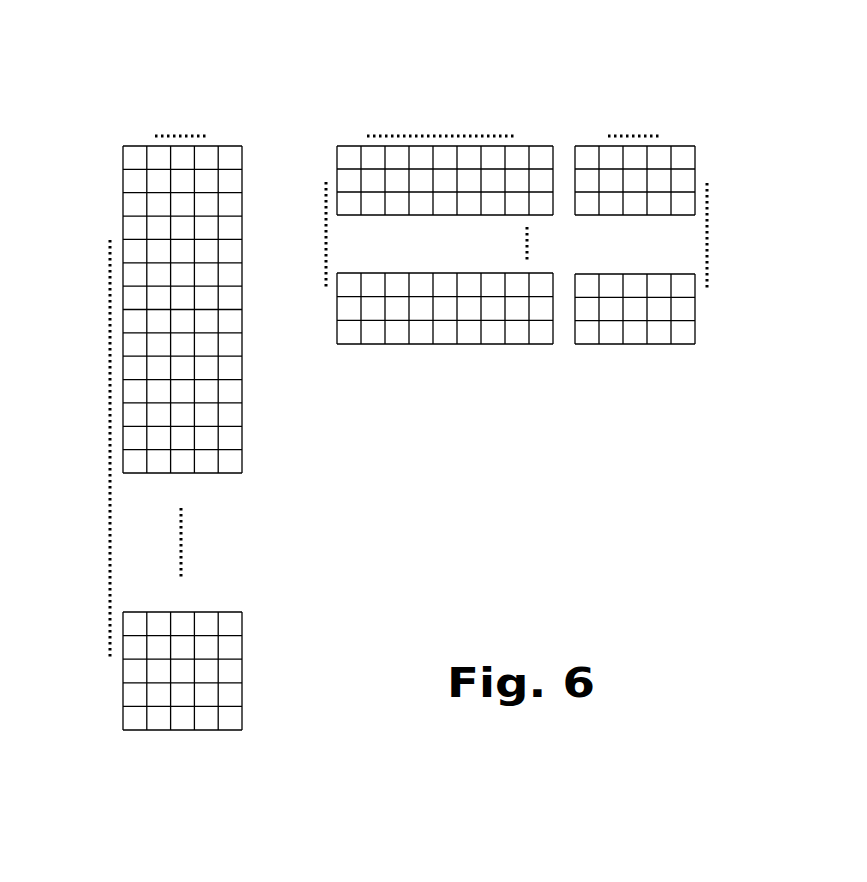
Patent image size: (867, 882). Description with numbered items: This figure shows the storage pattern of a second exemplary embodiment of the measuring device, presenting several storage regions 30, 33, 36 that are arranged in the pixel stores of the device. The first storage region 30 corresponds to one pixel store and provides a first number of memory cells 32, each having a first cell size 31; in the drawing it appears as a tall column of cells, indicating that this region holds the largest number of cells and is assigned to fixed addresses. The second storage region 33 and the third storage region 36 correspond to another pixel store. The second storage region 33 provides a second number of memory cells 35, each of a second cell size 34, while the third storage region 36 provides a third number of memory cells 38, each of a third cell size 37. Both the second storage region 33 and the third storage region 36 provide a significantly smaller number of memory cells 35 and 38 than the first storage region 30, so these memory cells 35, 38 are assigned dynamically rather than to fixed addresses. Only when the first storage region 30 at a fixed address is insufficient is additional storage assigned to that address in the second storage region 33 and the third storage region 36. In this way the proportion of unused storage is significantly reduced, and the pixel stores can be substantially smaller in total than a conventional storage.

The first storage region 30 is at (95, 78).
The first cell size 31 is at (232, 145).
The memory cells 32 is at (123, 160).
The second storage region 33 is at (318, 109).
The second cell size 34 is at (539, 143).
The memory cells 35 is at (336, 332).
The third storage region 36 is at (560, 112).
The third cell size 37 is at (687, 143).
The memory cells 38 is at (695, 332).